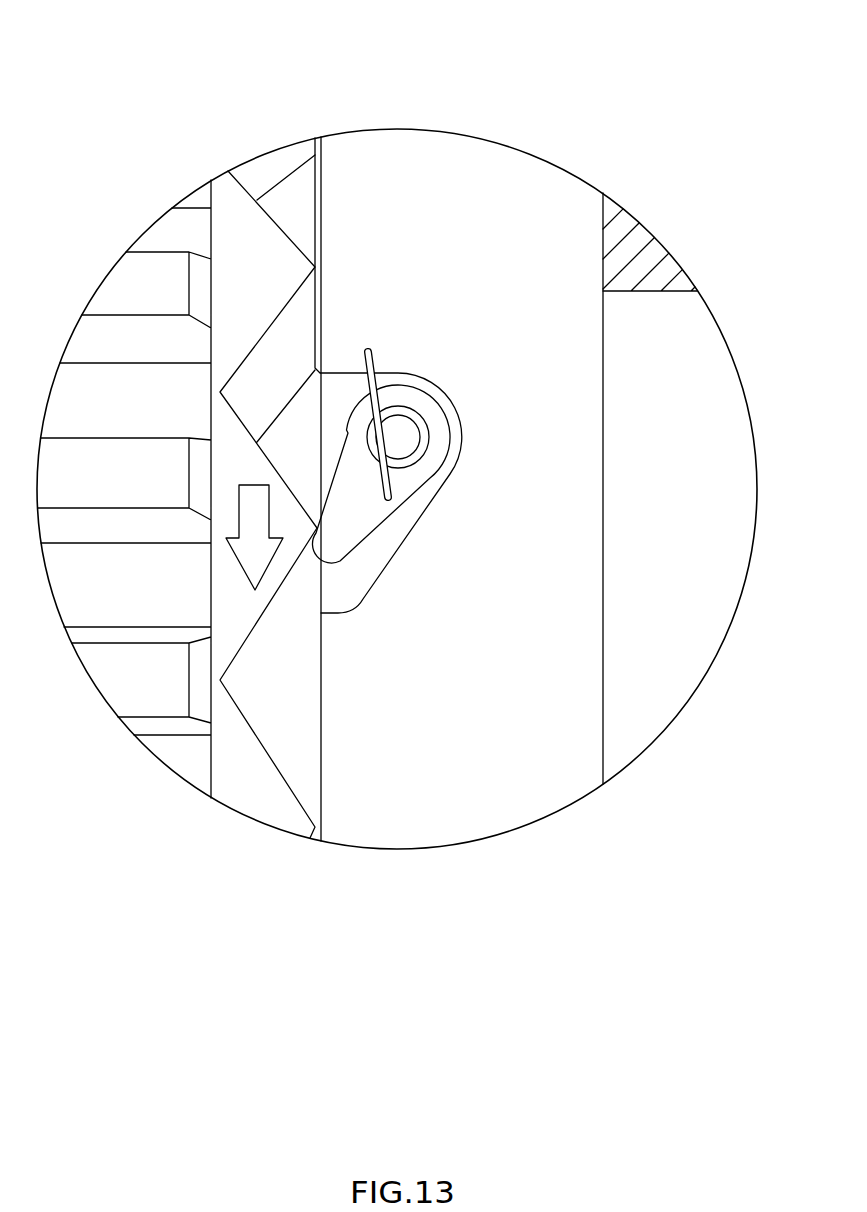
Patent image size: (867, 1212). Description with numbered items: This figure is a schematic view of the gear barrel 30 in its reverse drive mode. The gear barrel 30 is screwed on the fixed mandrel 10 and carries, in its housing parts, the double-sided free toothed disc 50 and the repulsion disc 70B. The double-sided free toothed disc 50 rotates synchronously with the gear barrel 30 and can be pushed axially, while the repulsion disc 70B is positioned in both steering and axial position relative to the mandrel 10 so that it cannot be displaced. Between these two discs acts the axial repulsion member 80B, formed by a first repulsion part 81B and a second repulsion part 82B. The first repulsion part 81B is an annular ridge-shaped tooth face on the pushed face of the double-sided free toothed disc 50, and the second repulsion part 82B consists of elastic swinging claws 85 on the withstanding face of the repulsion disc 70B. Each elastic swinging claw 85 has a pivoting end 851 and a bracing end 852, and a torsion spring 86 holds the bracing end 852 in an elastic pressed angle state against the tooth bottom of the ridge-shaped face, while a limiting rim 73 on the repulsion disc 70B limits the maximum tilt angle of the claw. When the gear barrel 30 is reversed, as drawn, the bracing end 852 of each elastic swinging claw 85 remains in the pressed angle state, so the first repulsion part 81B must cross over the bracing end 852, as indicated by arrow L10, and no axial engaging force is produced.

The mandrel 10 is at (678, 364).
The gear barrel 30 is at (638, 215).
The double-sided free toothed disc 50 is at (127, 684).
The repulsion disc 70B is at (467, 789).
The limiting rim 73 is at (352, 380).
The axial repulsion member 80B is at (370, 43).
The first repulsion part 81B is at (270, 240).
The second repulsion part 82B is at (336, 425).
The elastic swinging claw 85 is at (390, 512).
The pivoting end 851 is at (403, 430).
The bracing end 852 is at (340, 562).
The torsion spring 86 is at (388, 352).
The arrow L10 is at (268, 572).